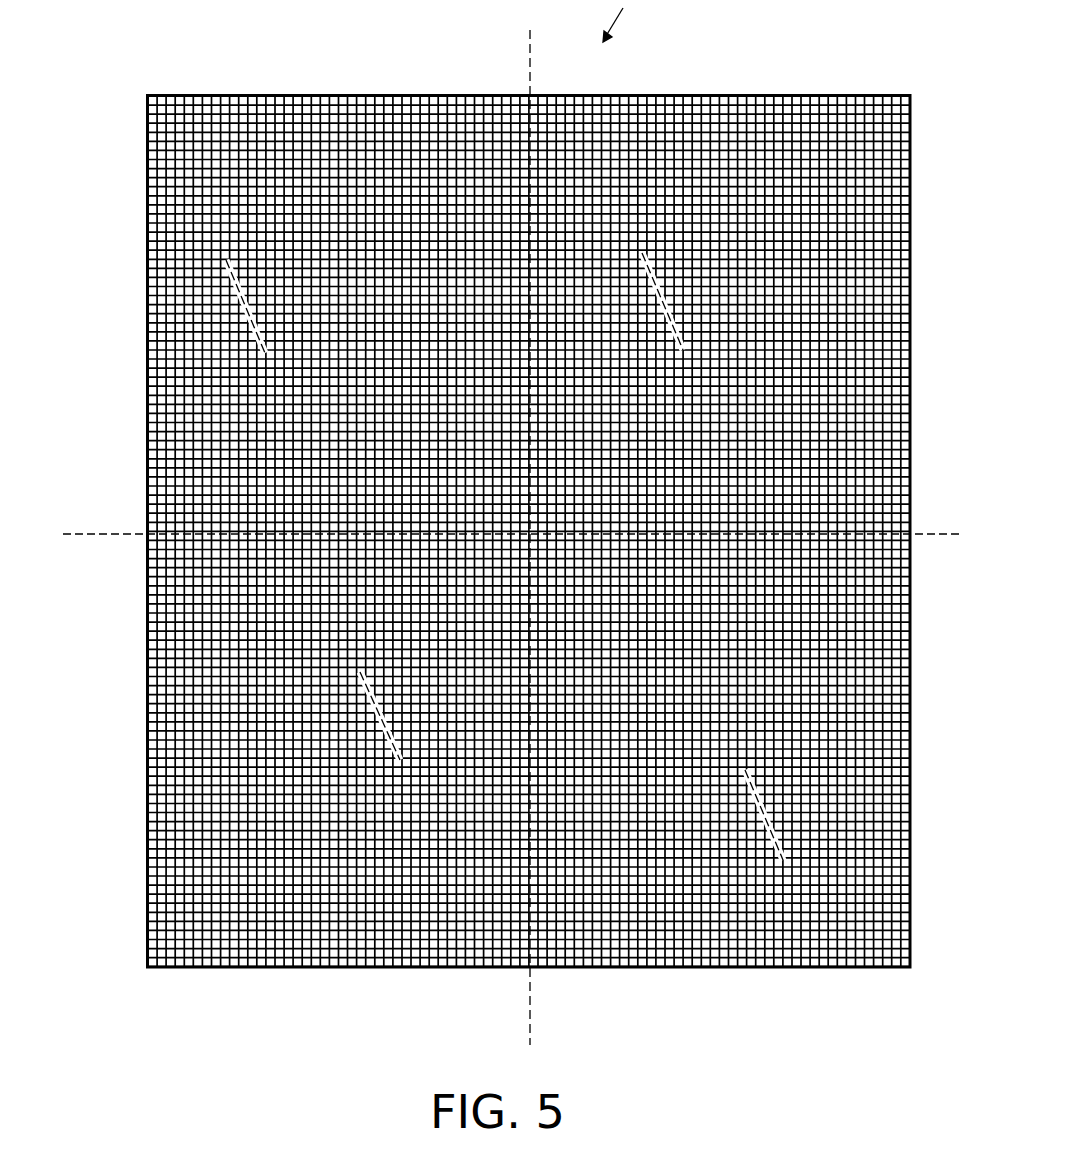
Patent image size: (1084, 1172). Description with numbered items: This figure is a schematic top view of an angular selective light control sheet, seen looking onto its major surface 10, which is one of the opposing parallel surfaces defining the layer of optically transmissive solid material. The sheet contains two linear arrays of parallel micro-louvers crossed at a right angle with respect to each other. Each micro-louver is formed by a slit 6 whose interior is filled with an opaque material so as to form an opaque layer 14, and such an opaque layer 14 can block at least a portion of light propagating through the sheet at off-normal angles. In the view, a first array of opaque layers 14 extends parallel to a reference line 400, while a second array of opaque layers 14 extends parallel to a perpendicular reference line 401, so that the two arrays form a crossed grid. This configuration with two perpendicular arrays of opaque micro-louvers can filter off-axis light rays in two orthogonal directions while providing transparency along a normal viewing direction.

The slit 6 is at (476, 501).
The opaque layer 14 is at (405, 96).
The major surface 10 is at (476, 538).
The reference line 400 is at (108, 536).
The perpendicular reference line 401 is at (531, 992).